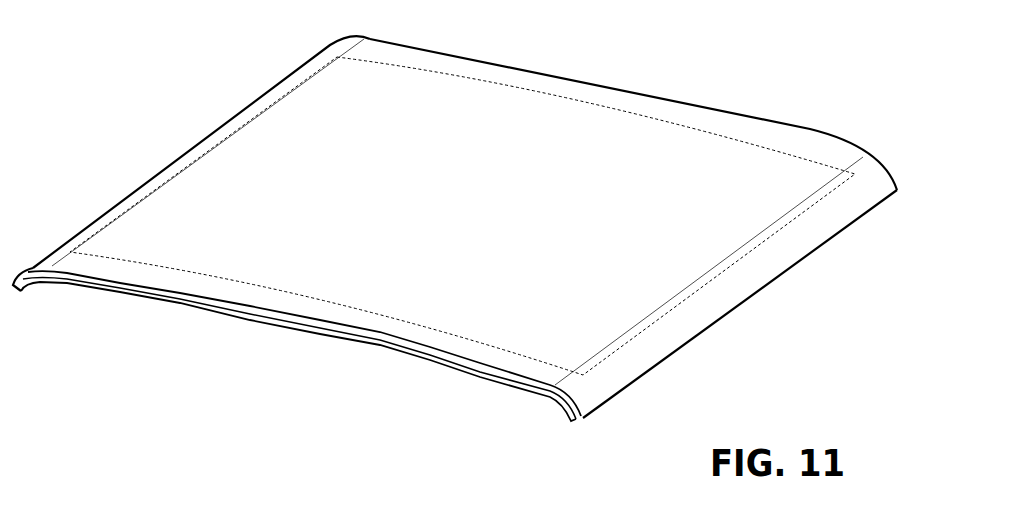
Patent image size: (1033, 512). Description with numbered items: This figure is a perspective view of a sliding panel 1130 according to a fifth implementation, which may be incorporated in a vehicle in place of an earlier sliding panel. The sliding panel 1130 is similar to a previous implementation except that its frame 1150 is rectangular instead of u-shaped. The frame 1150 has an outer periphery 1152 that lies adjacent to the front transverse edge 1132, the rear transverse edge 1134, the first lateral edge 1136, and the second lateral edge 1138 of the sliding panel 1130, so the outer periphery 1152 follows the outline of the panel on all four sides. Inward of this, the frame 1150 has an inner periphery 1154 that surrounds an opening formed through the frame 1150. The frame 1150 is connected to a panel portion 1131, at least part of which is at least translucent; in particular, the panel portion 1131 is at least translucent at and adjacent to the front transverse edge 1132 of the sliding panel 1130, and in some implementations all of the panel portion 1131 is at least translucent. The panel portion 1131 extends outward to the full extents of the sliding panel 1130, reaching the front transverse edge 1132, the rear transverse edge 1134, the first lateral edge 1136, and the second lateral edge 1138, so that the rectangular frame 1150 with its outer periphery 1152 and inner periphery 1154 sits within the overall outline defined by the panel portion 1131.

The sliding panel 1130 is at (455, 229).
The panel portion 1131 is at (317, 273).
The front transverse edge 1132 is at (413, 357).
The rear transverse edge 1134 is at (661, 100).
The first lateral edge 1136 is at (680, 347).
The second lateral edge 1138 is at (172, 164).
The frame 1150 is at (28, 289).
The outer periphery 1152 is at (533, 383).
The inner periphery 1154 is at (494, 344).